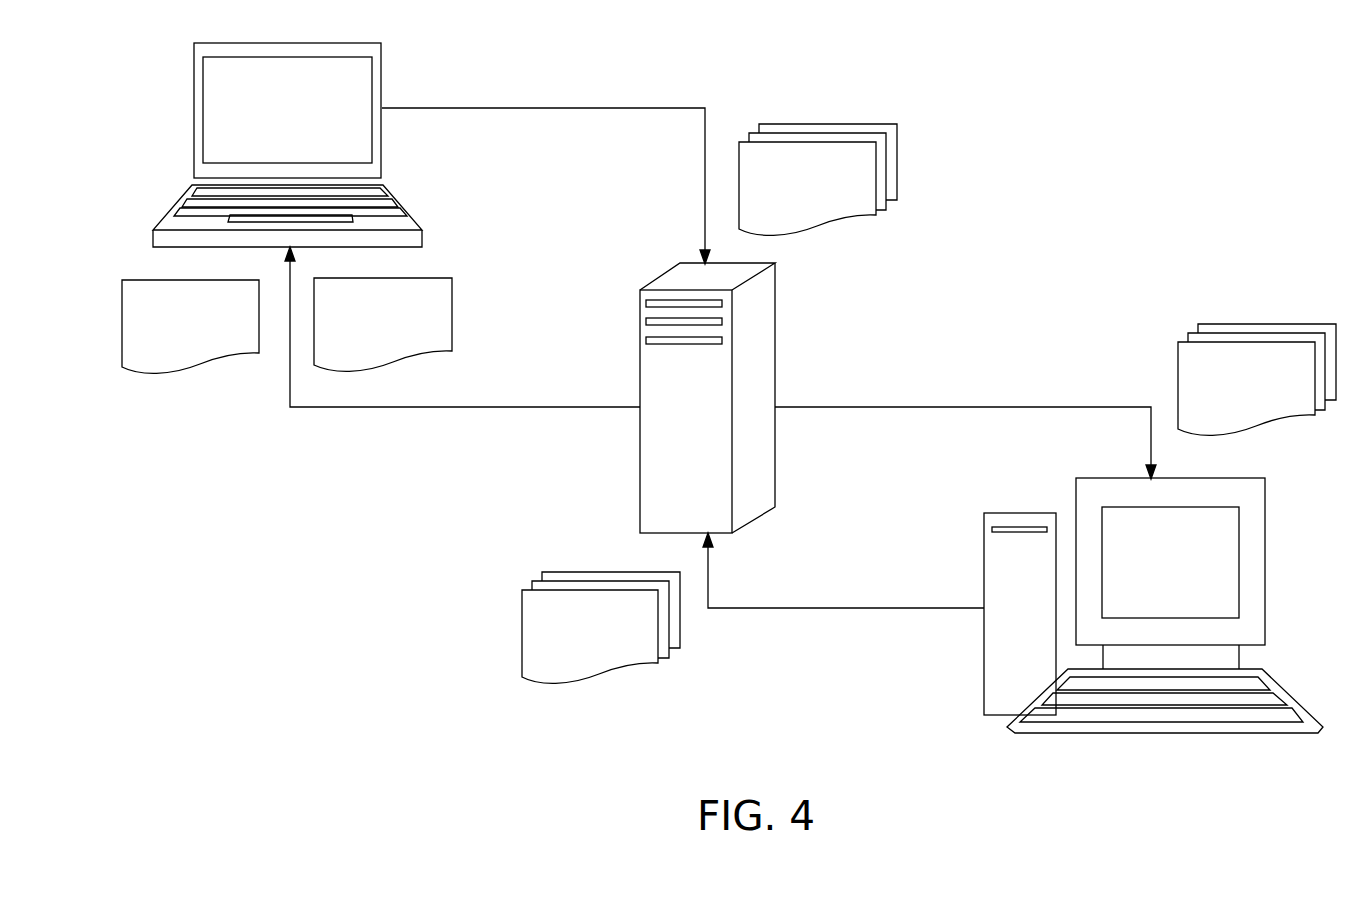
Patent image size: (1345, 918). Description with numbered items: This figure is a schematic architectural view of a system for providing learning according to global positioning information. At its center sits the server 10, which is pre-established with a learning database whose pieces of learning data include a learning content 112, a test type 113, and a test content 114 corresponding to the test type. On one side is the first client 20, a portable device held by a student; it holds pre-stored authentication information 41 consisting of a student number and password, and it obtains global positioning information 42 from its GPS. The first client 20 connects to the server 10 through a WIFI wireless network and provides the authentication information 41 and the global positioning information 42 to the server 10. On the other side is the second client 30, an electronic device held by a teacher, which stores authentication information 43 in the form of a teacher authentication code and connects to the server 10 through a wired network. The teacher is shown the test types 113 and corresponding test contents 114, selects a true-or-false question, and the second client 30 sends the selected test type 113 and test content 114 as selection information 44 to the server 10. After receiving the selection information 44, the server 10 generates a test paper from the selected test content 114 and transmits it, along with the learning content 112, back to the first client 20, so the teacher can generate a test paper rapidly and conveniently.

The server 10 is at (688, 514).
The first client 20 is at (257, 104).
The second client 30 is at (1155, 553).
The authentication information 41 is at (790, 191).
The global positioning information 42 is at (835, 191).
The authentication information 43 is at (563, 639).
The selection information 44 is at (607, 639).
The learning content 112 is at (187, 327).
The test type 113 is at (1243, 391).
The test content 114 is at (1295, 391).